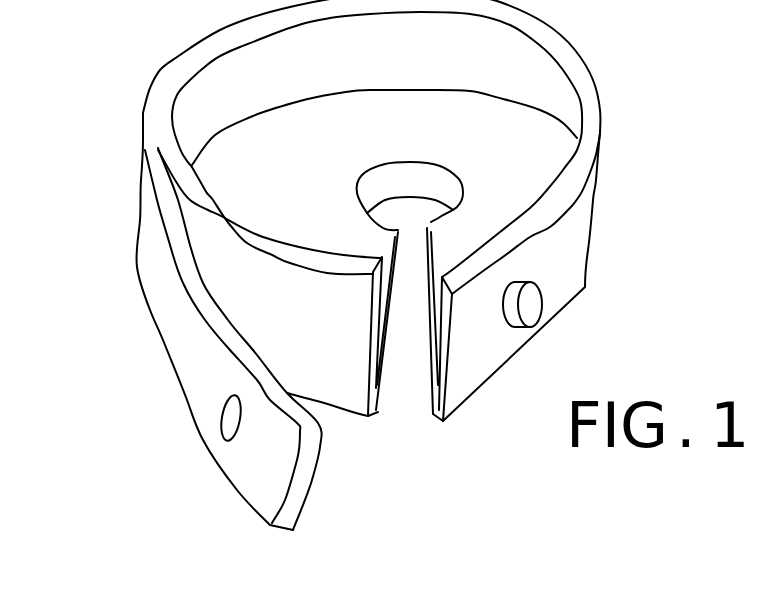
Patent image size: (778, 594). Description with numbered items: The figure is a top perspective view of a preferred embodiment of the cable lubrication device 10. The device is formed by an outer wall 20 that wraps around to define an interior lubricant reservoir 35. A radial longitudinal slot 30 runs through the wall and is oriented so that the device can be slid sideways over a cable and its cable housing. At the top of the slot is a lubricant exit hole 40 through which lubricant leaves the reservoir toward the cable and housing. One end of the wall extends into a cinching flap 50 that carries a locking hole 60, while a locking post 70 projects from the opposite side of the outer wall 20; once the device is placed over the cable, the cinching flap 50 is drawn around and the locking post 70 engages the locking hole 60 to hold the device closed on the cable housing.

The cable lubrication device 10 is at (118, 112).
The outer wall 20 is at (573, 237).
The radial longitudinal slot 30 is at (410, 383).
The lubricant reservoir 35 is at (332, 71).
The lubricant exit hole 40 is at (430, 183).
The cinching flap 50 is at (187, 333).
The locking hole 60 is at (222, 413).
The locking post 70 is at (540, 283).